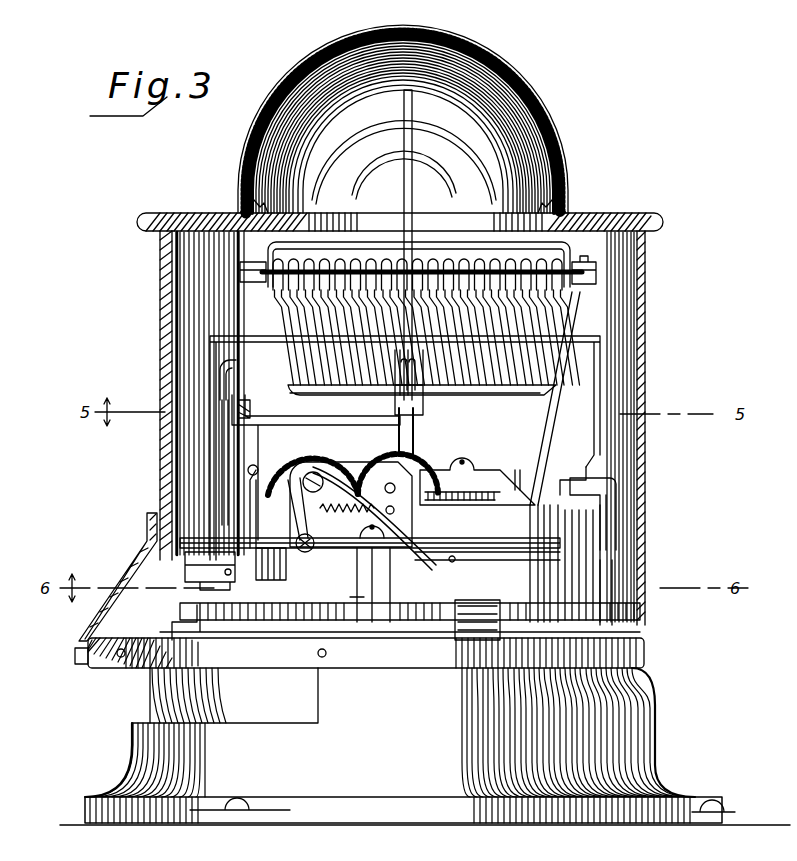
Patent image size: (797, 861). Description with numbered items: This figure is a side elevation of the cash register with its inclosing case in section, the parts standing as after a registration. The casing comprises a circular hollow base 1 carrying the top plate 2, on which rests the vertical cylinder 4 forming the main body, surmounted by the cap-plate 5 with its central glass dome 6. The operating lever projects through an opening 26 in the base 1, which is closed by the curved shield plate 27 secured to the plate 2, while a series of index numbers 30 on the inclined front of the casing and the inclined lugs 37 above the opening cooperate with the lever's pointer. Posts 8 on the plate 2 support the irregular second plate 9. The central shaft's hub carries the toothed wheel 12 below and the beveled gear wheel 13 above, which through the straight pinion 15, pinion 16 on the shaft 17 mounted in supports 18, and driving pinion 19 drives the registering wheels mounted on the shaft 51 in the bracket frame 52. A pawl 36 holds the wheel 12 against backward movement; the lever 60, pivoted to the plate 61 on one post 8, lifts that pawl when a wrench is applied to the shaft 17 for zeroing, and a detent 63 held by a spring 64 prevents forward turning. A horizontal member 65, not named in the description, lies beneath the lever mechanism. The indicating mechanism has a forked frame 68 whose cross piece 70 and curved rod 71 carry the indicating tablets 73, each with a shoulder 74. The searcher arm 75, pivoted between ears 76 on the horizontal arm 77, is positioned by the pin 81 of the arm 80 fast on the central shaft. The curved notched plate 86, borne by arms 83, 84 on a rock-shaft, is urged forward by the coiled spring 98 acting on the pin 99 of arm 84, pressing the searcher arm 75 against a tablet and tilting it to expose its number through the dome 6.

The hollow base 1 is at (425, 746).
The top plate 2 is at (366, 653).
The vertical cylinder 4 is at (645, 410).
The cap-plate 5 is at (613, 215).
The glass dome 6 is at (555, 162).
The posts 8 is at (615, 583).
The second horizontal plate 9 is at (487, 555).
The toothed wheel 12 is at (300, 612).
The beveled gear wheel 13 is at (482, 512).
The straight pinion 15 is at (418, 460).
The pinion 16 is at (380, 455).
The shaft 17 is at (318, 492).
The supports 18 is at (347, 519).
The driving pinion 19 is at (300, 455).
The opening 26 is at (135, 710).
The curved shield plate 27 is at (234, 695).
The index numbers 30 is at (135, 560).
The pawl 36 is at (465, 605).
The lugs 37 is at (75, 660).
The shaft 51 is at (251, 461).
The bracket frame 52 is at (236, 398).
The lever 60 is at (362, 495).
The plate 61 is at (380, 546).
The detent 63 is at (301, 515).
The spring 64 is at (368, 528).
The rail 65 is at (330, 568).
The forked frame 68 is at (586, 270).
The cross piece 70 is at (456, 243).
The curved rod 71 is at (412, 262).
The indicating tablets 73 is at (548, 316).
The shoulder 74 is at (262, 295).
The searcher arm 75 is at (408, 320).
The ears 76 is at (425, 395).
The horizontal arm 77 is at (420, 412).
The arm 80 is at (352, 418).
The pin 81 is at (252, 410).
The arm 83 is at (592, 412).
The arm 84 is at (222, 447).
The curved plate 86 is at (262, 338).
The coiled spring 98 is at (271, 573).
The pin 99 is at (250, 502).